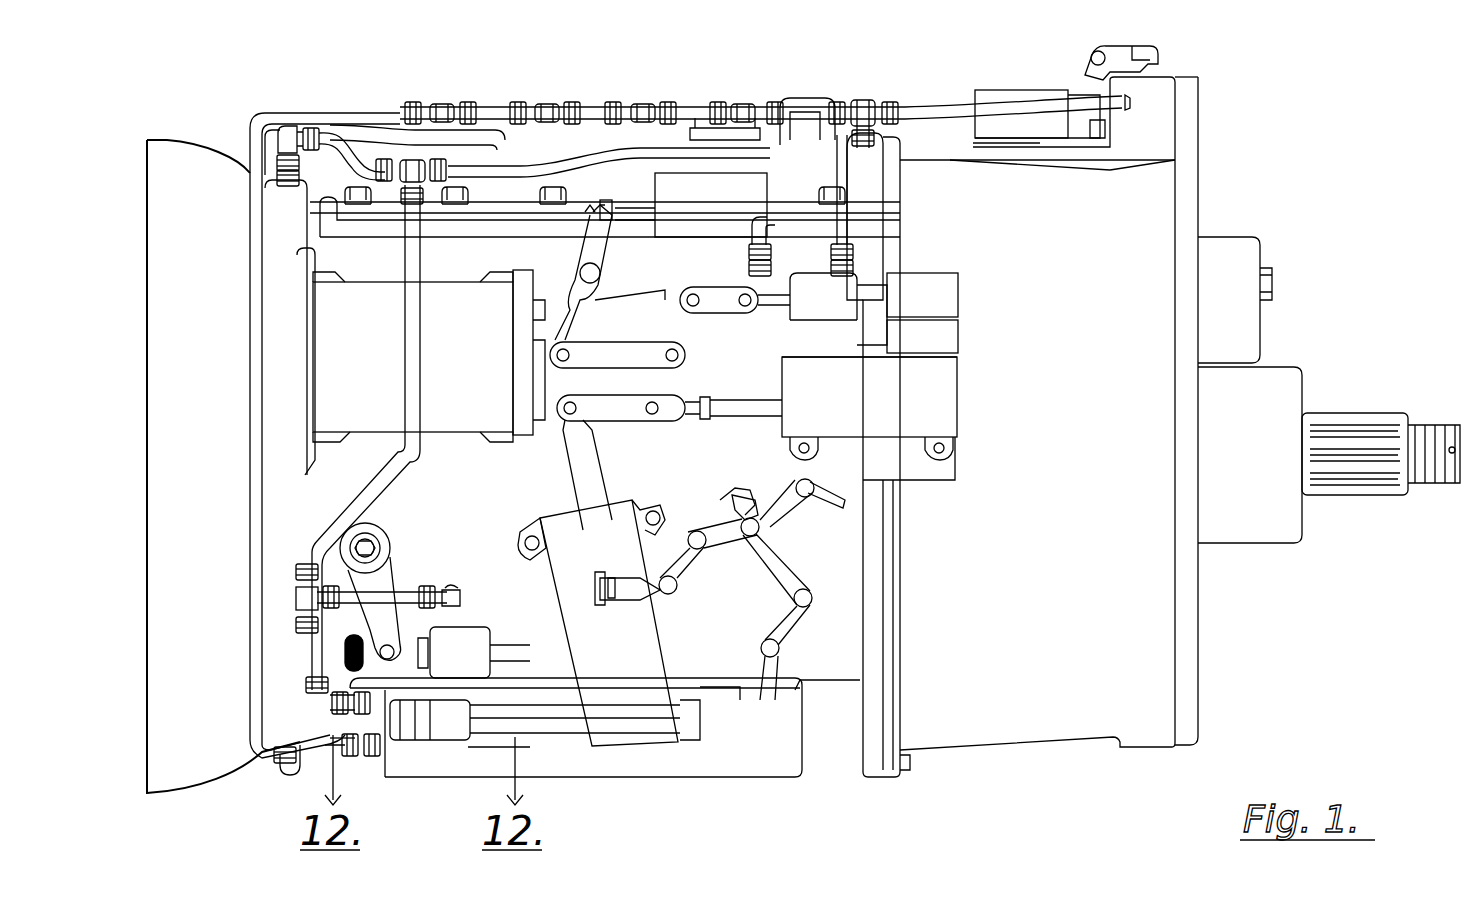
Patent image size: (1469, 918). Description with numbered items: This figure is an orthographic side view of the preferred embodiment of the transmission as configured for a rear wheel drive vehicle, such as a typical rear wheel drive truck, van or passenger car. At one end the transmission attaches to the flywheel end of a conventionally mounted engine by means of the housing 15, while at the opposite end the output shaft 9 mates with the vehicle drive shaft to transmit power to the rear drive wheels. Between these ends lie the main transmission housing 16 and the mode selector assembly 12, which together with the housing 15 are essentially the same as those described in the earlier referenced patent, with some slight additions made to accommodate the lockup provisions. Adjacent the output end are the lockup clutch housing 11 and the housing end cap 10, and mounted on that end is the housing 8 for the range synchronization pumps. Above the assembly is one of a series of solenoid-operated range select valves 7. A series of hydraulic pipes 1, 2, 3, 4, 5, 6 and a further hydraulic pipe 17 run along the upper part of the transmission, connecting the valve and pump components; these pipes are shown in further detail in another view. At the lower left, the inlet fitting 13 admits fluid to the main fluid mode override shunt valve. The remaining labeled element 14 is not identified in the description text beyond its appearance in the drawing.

The hydraulic pipe 1 is at (365, 130).
The hydraulic pipe 2 is at (497, 108).
The hydraulic pipe 3 is at (598, 108).
The hydraulic pipe 4 is at (695, 107).
The hydraulic pipe 5 is at (808, 108).
The hydraulic pipe 6 is at (868, 98).
The solenoid-operated range select valve 7 is at (1004, 88).
The housing for the range synchronization pumps 8 is at (1262, 258).
The output shaft 9 is at (1360, 495).
The housing end cap 10 is at (1200, 603).
The lockup clutch housing 11 is at (1045, 744).
The mode selector assembly 12 is at (695, 777).
The inlet fitting for the main fluid mode override shunt valve 13 is at (378, 768).
The side frame 14 is at (248, 490).
The housing 15 is at (147, 330).
The main transmission housing 16 is at (865, 620).
The hydraulic pipe 17 is at (950, 132).